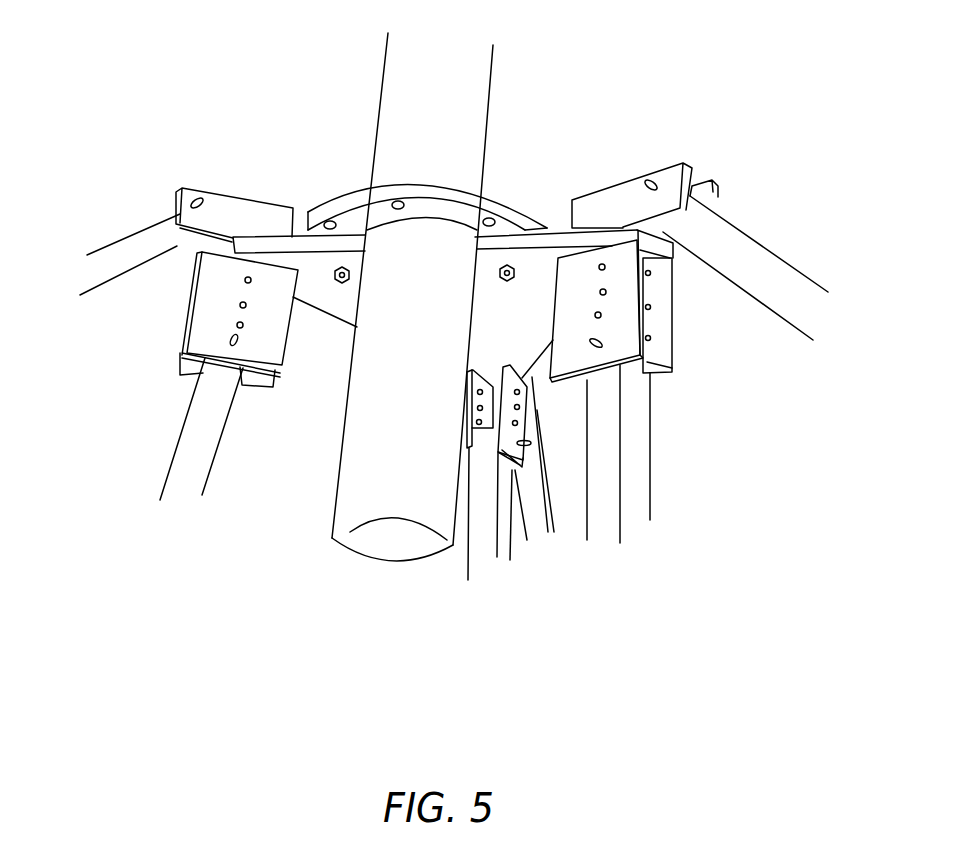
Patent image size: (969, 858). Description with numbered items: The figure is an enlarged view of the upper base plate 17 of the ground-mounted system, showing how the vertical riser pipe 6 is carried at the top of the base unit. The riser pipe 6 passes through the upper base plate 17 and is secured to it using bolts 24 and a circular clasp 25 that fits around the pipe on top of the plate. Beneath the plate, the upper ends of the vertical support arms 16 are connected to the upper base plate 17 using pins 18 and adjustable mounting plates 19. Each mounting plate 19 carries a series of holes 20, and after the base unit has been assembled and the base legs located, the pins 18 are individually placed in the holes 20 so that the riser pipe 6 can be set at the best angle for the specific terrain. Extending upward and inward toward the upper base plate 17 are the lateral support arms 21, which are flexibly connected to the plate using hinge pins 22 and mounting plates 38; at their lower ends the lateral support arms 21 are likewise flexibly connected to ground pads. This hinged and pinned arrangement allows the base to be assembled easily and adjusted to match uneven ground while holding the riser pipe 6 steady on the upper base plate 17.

The vertical riser pipe 6 is at (412, 297).
The vertical support arms 16 is at (219, 457).
The upper base plate 17 is at (497, 399).
The pins 18 is at (241, 338).
The adjustable mounting plates 19 is at (690, 318).
The holes 20 is at (252, 282).
The lateral support arms 21 is at (122, 240).
The hinge pins 22 is at (198, 185).
The bolts 24 is at (345, 285).
The circular clasp 25 is at (462, 186).
The mounting plates 38 is at (222, 192).